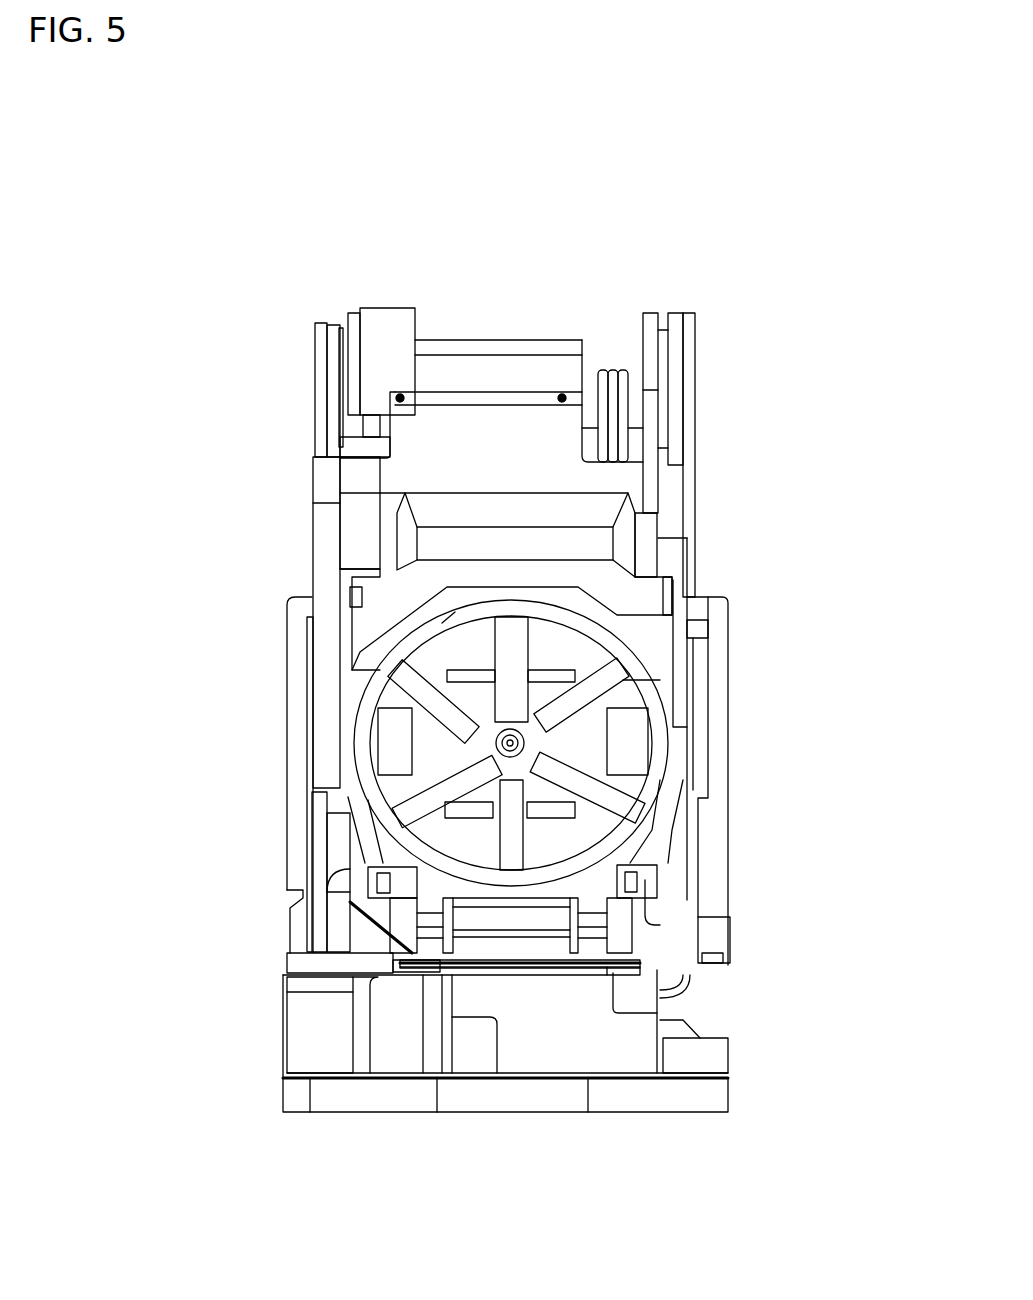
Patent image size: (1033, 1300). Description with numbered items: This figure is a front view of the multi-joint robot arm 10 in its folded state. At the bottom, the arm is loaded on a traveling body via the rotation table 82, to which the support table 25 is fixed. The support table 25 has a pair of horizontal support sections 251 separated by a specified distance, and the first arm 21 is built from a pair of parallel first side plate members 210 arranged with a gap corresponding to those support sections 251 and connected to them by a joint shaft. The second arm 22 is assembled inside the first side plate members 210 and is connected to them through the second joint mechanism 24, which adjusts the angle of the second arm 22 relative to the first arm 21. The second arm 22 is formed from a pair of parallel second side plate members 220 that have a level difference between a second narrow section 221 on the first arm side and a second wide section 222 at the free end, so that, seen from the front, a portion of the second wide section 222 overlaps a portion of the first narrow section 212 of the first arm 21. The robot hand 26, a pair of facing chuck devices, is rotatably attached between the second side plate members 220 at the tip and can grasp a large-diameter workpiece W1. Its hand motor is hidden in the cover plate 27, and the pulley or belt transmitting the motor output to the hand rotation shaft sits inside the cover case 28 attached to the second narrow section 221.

The multi-joint robot arm 10 is at (480, 207).
The second joint mechanism 24 is at (418, 329).
The cover plate 27 is at (463, 447).
The first narrow section 212 is at (660, 512).
The second arm 22 is at (698, 350).
The cover case 28 is at (325, 518).
The second side plate members 220 is at (345, 610).
The second narrow section 221 is at (648, 505).
The second wide section 222 is at (680, 583).
The workpiece W1 is at (442, 623).
The robot hand 26 is at (452, 660).
The first side plate members 210 is at (320, 758).
The first arm 21 is at (285, 828).
The support sections 251 is at (315, 915).
The support table 25 is at (565, 1025).
The rotation table 82 is at (707, 1093).